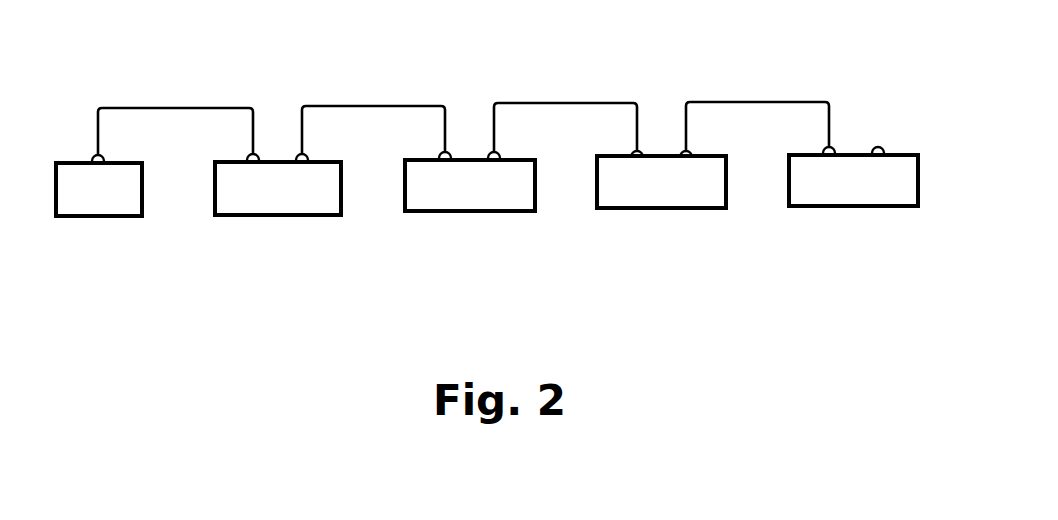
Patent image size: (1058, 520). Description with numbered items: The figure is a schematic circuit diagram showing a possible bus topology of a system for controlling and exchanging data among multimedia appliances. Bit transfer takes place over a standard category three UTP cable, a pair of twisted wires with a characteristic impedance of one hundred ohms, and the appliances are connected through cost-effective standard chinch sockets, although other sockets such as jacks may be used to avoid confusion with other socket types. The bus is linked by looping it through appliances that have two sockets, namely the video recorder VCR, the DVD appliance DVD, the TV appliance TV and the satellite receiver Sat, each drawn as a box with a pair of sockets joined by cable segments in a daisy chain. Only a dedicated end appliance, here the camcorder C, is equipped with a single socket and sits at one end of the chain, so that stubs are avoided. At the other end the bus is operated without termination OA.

The camcorder C is at (107, 203).
The video recorder VCR is at (295, 200).
The DVD appliance DVD is at (482, 197).
The TV appliance TV is at (667, 195).
The satellite receiver Sat is at (860, 192).
The termination OA is at (879, 147).